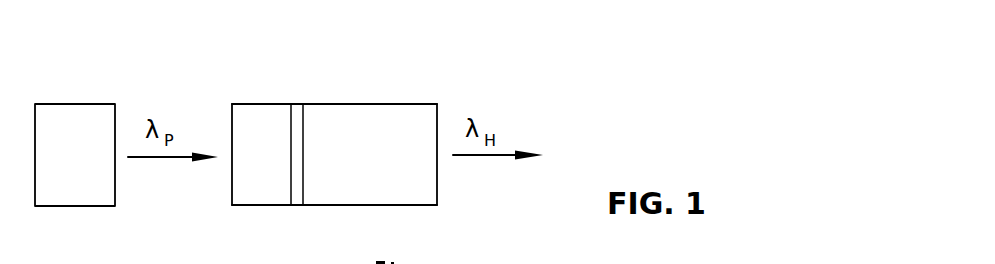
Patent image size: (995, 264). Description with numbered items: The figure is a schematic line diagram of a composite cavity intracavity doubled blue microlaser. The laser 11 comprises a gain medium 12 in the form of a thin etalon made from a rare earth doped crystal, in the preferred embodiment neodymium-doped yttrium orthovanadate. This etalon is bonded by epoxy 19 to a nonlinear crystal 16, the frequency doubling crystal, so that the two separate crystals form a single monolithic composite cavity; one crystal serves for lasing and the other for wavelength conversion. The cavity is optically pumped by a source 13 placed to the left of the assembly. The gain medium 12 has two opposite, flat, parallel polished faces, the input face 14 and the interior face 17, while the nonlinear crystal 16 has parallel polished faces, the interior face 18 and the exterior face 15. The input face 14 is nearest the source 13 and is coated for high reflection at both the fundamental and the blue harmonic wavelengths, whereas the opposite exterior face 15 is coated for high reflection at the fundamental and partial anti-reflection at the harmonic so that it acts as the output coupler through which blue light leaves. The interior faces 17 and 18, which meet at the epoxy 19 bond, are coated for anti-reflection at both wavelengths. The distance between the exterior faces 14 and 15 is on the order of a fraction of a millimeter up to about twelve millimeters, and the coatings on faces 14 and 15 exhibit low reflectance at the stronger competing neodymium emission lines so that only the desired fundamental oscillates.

The laser 11 is at (341, 135).
The gain medium 12 is at (248, 112).
The source 13 is at (75, 104).
The input face 14 is at (232, 197).
The output coupler face 15 is at (437, 192).
The nonlinear crystal 16 is at (398, 118).
The interior face of the etalon 17 is at (291, 172).
The interior face of the nonlinear crystal 18 is at (303, 136).
The epoxy 19 is at (297, 206).